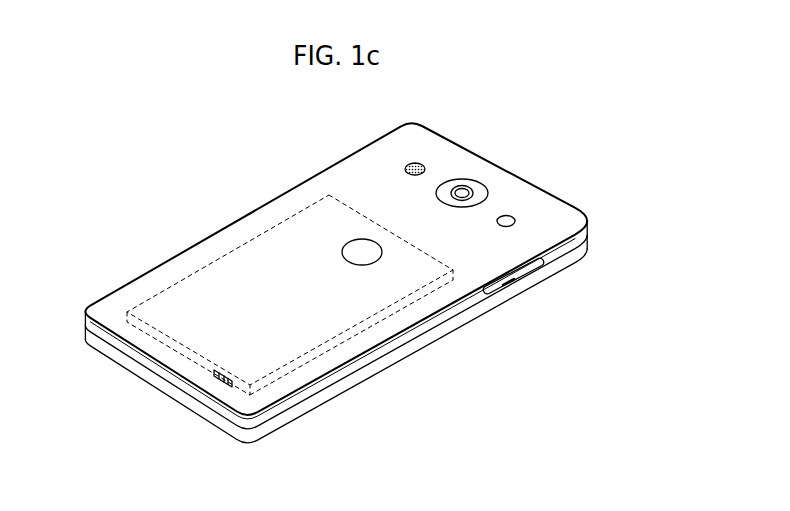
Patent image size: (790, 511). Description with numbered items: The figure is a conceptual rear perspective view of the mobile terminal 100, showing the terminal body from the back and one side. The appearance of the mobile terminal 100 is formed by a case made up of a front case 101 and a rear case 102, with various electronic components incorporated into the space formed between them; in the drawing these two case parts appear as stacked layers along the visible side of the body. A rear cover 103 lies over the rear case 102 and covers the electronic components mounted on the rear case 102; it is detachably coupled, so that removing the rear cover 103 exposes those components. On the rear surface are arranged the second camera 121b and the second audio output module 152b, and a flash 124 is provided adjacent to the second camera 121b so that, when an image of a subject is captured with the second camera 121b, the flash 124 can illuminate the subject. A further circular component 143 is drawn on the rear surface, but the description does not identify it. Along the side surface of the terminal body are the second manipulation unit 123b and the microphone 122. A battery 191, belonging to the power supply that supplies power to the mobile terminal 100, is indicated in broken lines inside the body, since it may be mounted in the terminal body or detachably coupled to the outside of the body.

The mobile terminal 100 is at (366, 276).
The front case 101 is at (588, 249).
The rear case 102 is at (587, 234).
The rear cover 103 is at (585, 217).
The second camera 121b is at (466, 191).
The microphone 122 is at (165, 376).
The second manipulation unit 123b is at (509, 293).
The flash 124 is at (511, 218).
The sensor 143 is at (370, 252).
The second audio output module 152b is at (420, 164).
The battery 191 is at (355, 337).